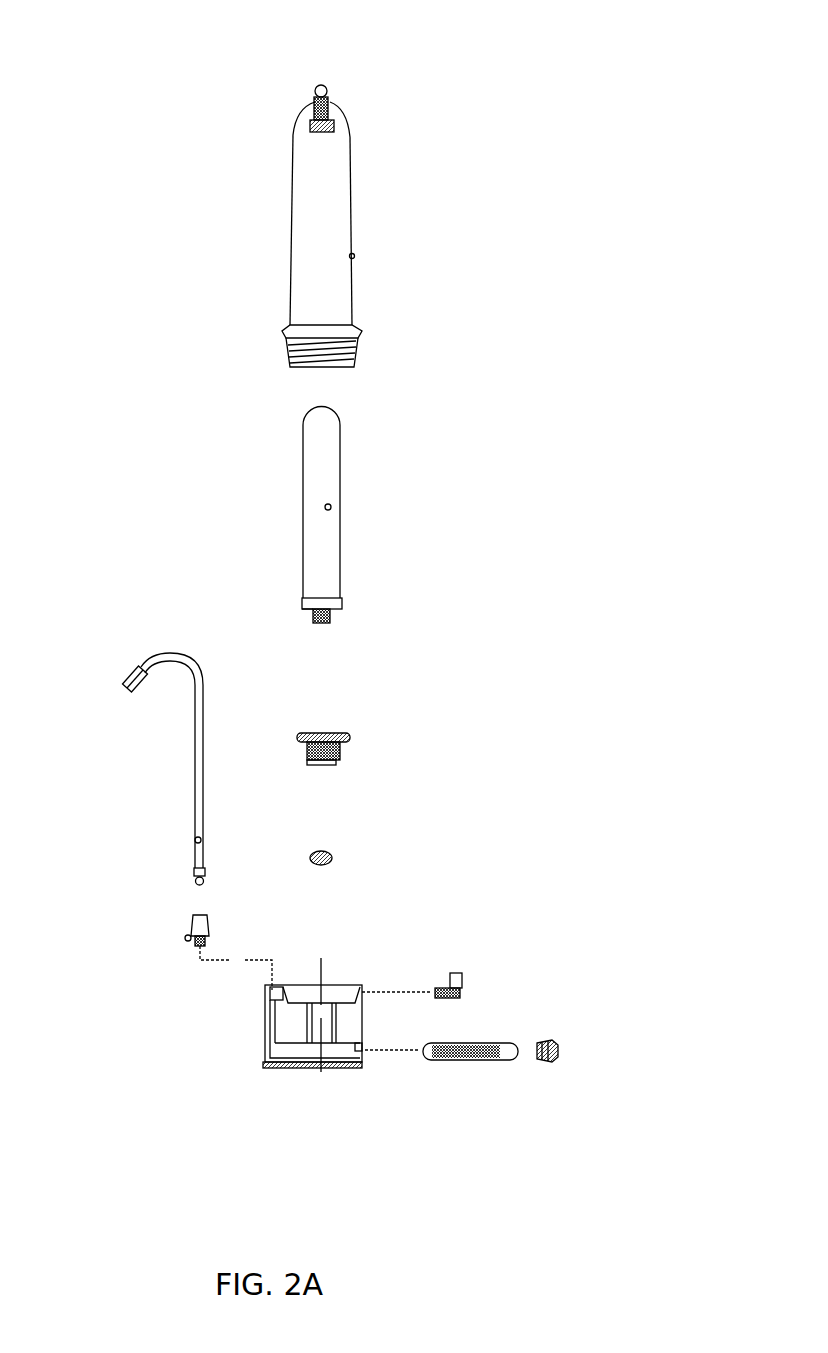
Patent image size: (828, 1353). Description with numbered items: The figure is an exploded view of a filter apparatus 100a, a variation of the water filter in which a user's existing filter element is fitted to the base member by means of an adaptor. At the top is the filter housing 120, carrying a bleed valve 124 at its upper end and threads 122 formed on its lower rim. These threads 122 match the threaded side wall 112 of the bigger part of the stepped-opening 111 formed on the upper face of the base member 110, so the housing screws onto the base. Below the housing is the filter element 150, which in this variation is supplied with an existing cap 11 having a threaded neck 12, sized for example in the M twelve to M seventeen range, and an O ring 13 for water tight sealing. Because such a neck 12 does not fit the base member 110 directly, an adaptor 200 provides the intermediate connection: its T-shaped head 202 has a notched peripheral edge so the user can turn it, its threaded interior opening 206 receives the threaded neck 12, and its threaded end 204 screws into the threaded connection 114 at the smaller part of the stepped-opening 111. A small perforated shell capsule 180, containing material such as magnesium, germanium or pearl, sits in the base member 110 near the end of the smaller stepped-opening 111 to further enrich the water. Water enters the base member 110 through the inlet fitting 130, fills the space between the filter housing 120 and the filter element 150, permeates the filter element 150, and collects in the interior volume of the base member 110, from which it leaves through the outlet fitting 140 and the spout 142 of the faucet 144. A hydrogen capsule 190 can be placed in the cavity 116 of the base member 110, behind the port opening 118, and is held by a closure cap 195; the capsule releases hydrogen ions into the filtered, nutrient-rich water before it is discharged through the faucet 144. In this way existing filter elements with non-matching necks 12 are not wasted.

The filter apparatus 100a is at (614, 110).
The bleed valve 124 is at (327, 91).
The filter housing 120 is at (352, 256).
The threads 122 is at (358, 352).
The filter element 150 is at (332, 507).
The existing cap 11 is at (332, 603).
The O ring 13 is at (310, 610).
The neck 12 is at (330, 617).
The adaptor 200 is at (332, 732).
The T-shaped head 202 is at (338, 733).
The threaded end 204 is at (328, 750).
The interior opening 206 is at (330, 764).
The shell capsule 180 is at (333, 857).
The faucet 144 is at (120, 682).
The spout 142 is at (195, 840).
The outlet fitting 140 is at (185, 938).
The stepped-opening 111 is at (303, 975).
The base member 110 is at (309, 1041).
The side wall 112 is at (358, 992).
The threaded connection 114 is at (336, 1020).
The cavity 116 is at (330, 1048).
The port opening 118 is at (358, 1055).
The inlet fitting 130 is at (458, 995).
The hydrogen capsule 190 is at (475, 1060).
The closure cap 195 is at (558, 1055).